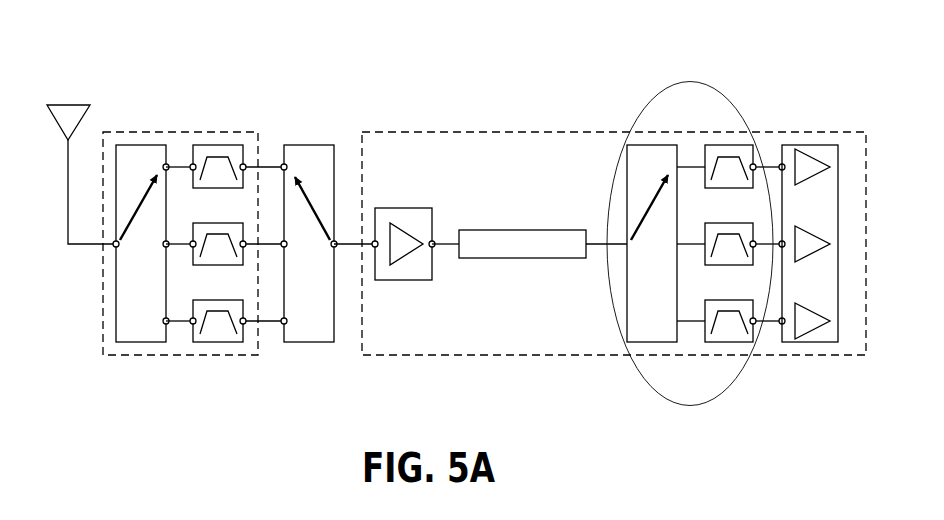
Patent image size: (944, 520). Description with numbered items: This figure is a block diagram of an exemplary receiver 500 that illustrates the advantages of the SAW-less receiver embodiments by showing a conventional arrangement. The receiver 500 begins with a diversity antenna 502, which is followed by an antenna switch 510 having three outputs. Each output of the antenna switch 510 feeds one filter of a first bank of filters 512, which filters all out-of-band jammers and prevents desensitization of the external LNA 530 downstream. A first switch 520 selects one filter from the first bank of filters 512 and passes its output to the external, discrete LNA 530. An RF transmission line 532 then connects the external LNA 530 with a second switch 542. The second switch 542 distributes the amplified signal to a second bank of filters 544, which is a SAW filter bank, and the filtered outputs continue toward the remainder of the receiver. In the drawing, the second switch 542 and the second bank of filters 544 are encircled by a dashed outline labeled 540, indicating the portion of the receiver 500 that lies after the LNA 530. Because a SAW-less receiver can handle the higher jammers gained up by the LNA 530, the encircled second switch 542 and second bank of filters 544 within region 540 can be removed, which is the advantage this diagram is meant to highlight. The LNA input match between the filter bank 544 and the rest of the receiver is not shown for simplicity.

The receiver 500 is at (482, 42).
The diversity antenna 502 is at (84, 100).
The antenna switch 510 is at (161, 222).
The first bank of filters 512 is at (226, 222).
The first switch 520 is at (329, 222).
The external LNA 530 is at (422, 222).
The RF transmission line 532 is at (543, 211).
The switching and filtering block 540 is at (690, 223).
The second switch 542 is at (673, 222).
The second bank of filters 544 is at (751, 222).